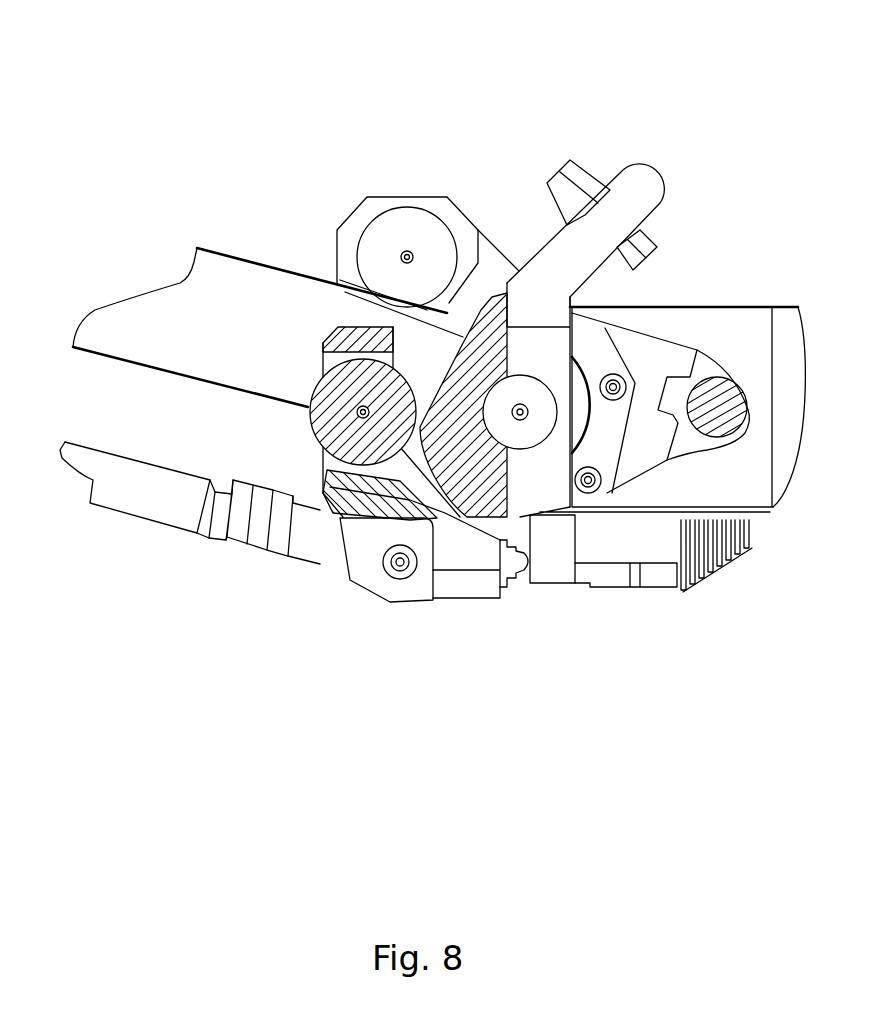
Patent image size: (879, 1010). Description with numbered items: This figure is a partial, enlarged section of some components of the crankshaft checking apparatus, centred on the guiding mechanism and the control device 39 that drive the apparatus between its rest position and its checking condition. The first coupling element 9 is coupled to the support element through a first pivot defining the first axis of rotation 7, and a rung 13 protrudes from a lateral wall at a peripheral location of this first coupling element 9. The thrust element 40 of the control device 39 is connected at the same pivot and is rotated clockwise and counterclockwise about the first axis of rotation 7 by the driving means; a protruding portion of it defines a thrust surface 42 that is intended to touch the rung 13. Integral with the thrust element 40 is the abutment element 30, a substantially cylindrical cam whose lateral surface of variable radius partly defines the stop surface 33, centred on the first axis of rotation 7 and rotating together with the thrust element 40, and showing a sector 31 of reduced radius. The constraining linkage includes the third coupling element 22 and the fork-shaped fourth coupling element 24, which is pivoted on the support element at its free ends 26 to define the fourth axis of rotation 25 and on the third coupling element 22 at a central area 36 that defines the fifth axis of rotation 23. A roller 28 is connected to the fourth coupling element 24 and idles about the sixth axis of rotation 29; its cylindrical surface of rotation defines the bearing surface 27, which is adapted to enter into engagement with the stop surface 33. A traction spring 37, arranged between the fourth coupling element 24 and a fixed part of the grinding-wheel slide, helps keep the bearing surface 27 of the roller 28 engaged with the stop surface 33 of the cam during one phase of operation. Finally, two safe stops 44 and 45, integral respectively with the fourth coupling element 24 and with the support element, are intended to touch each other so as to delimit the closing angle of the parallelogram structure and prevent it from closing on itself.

The first axis of rotation 7 is at (521, 402).
The first coupling element 9 is at (213, 285).
The rung 13 is at (722, 398).
The third coupling element 22 is at (118, 493).
The fifth axis of rotation 23 is at (397, 570).
The fourth coupling element 24 is at (455, 550).
The fourth axis of rotation 25 is at (408, 251).
The free ends 26 is at (350, 233).
The bearing surface 27 is at (303, 435).
The roller 28 is at (327, 440).
The sixth axis of rotation 29 is at (363, 412).
The abutment element 30 is at (493, 350).
The sector with reduced radius 31 is at (345, 292).
The stop surface 33 is at (340, 280).
The central area 36 is at (420, 587).
The traction spring 37 is at (707, 587).
The control device 39 is at (750, 107).
The thrust element 40 is at (632, 193).
The thrust surface 42 is at (660, 260).
The safe stop 44 is at (520, 563).
The safe stop 45 is at (550, 550).